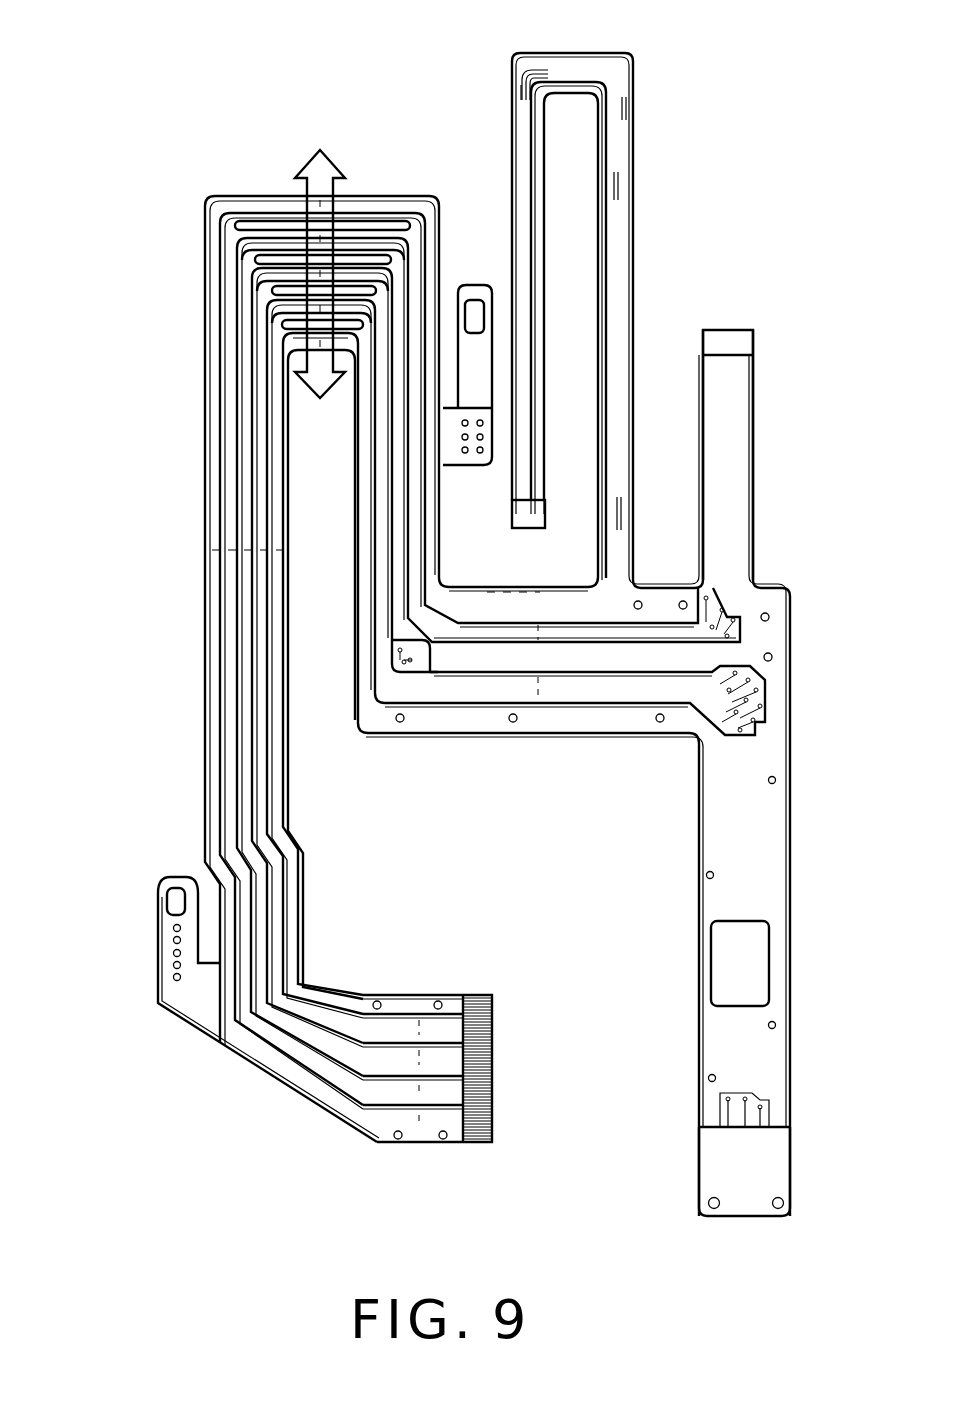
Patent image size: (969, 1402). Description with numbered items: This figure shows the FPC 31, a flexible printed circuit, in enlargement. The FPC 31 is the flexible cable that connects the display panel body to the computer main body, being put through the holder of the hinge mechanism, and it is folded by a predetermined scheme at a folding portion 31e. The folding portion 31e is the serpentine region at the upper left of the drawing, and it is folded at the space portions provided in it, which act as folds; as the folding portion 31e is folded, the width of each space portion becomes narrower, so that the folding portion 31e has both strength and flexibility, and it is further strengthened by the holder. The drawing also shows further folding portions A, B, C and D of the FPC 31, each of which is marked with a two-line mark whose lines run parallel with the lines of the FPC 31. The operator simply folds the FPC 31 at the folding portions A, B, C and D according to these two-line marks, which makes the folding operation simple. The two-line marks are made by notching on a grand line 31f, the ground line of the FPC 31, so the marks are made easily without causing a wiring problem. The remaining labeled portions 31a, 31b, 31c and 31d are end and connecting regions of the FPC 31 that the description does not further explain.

The FPC 31 is at (742, 200).
The connector terminal portion 31a is at (792, 1169).
The terminal portion 31b is at (512, 515).
The connector portion 31c is at (756, 343).
The connector portion 31d is at (496, 1085).
The folding portion 31e is at (343, 186).
The grand line 31f is at (578, 60).
The folding portion A is at (623, 507).
The folding portion B is at (620, 186).
The folding portion C is at (628, 107).
The folding portion D is at (518, 90).